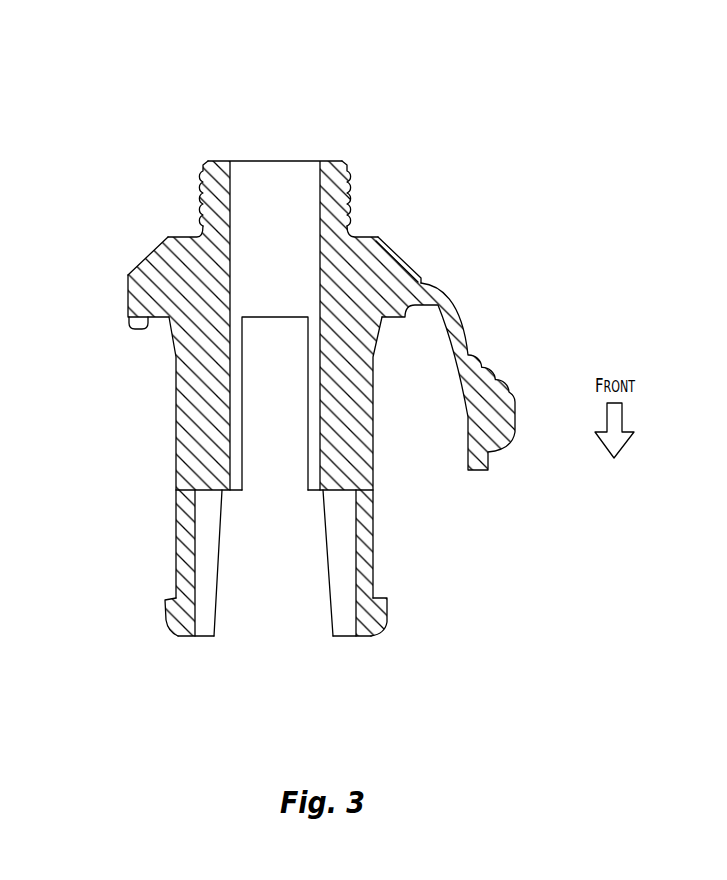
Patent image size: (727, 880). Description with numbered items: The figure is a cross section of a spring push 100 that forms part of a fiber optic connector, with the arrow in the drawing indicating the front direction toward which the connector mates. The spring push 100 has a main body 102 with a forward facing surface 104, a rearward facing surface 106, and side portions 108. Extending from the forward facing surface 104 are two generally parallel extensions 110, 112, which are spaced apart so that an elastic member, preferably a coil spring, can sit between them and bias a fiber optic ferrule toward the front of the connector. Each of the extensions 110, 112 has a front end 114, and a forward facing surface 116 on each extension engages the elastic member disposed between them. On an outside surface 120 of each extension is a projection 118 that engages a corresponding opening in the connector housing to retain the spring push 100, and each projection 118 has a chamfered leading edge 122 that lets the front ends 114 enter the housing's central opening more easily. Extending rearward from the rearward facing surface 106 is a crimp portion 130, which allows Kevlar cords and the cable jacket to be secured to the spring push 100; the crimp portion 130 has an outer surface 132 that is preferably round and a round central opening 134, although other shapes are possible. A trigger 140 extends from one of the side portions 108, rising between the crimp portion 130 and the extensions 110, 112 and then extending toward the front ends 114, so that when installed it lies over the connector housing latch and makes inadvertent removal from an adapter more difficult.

The spring push 100 is at (353, 107).
The main body 102 is at (130, 260).
The forward facing surface 104 is at (138, 329).
The rearward facing surface 106 is at (376, 237).
The side portions 108 is at (421, 276).
The first generally parallel extension 110 is at (176, 473).
The second generally parallel extension 112 is at (374, 461).
The front end 114 is at (183, 638).
The forward facing surface 116 is at (308, 492).
The projection 118 is at (173, 598).
The outside surface 120 is at (176, 504).
The chamfered leading edge 122 is at (170, 633).
The crimp portion 130 is at (202, 176).
The outer surface 132 is at (348, 174).
The central opening 134 is at (286, 182).
The trigger 140 is at (497, 450).